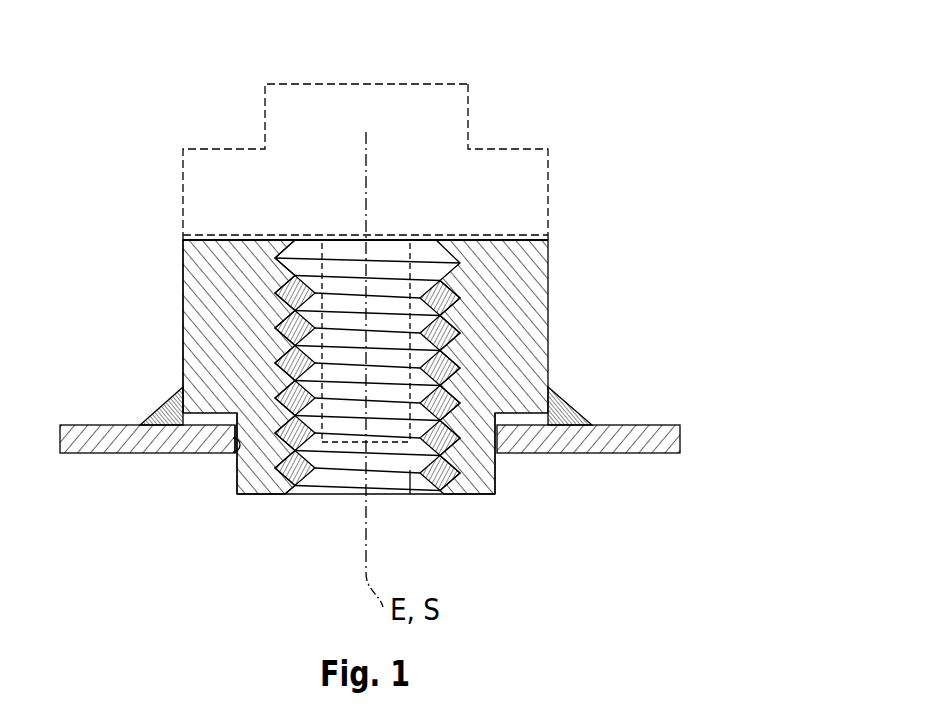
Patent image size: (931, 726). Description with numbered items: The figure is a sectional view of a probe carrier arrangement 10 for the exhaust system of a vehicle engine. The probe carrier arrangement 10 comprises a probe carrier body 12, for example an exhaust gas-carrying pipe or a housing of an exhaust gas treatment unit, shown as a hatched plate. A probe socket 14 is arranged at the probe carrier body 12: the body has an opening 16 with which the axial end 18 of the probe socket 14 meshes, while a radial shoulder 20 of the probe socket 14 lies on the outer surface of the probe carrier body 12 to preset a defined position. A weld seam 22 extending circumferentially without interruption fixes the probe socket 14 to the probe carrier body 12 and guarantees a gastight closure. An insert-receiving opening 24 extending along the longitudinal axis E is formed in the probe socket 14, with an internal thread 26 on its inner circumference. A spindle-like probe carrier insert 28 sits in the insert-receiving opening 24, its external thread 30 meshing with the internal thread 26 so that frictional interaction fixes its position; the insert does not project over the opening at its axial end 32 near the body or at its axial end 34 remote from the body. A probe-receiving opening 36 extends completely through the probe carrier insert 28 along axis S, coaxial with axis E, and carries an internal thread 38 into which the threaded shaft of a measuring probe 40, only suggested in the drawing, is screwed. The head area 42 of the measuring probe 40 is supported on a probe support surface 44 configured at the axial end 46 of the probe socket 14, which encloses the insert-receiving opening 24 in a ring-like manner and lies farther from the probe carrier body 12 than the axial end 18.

The probe carrier arrangement 10 is at (640, 82).
The probe carrier body 12 is at (635, 453).
The probe socket 14 is at (183, 330).
The opening 16 is at (237, 447).
The axial end 18 is at (500, 493).
The radial shoulder 20 is at (525, 422).
The weld seam 22 is at (165, 412).
The insert-receiving opening 24 is at (385, 250).
The internal thread 26 is at (292, 240).
The probe carrier insert 28 is at (333, 258).
The external thread 30 is at (448, 364).
The axial end 32 is at (411, 490).
The axial end 34 is at (380, 253).
The probe-receiving opening 36 is at (347, 485).
The internal thread 38 is at (317, 483).
The measuring probe 40 is at (183, 149).
The head area 42 is at (548, 178).
The probe support surface 44 is at (502, 238).
The axial end 46 is at (183, 251).